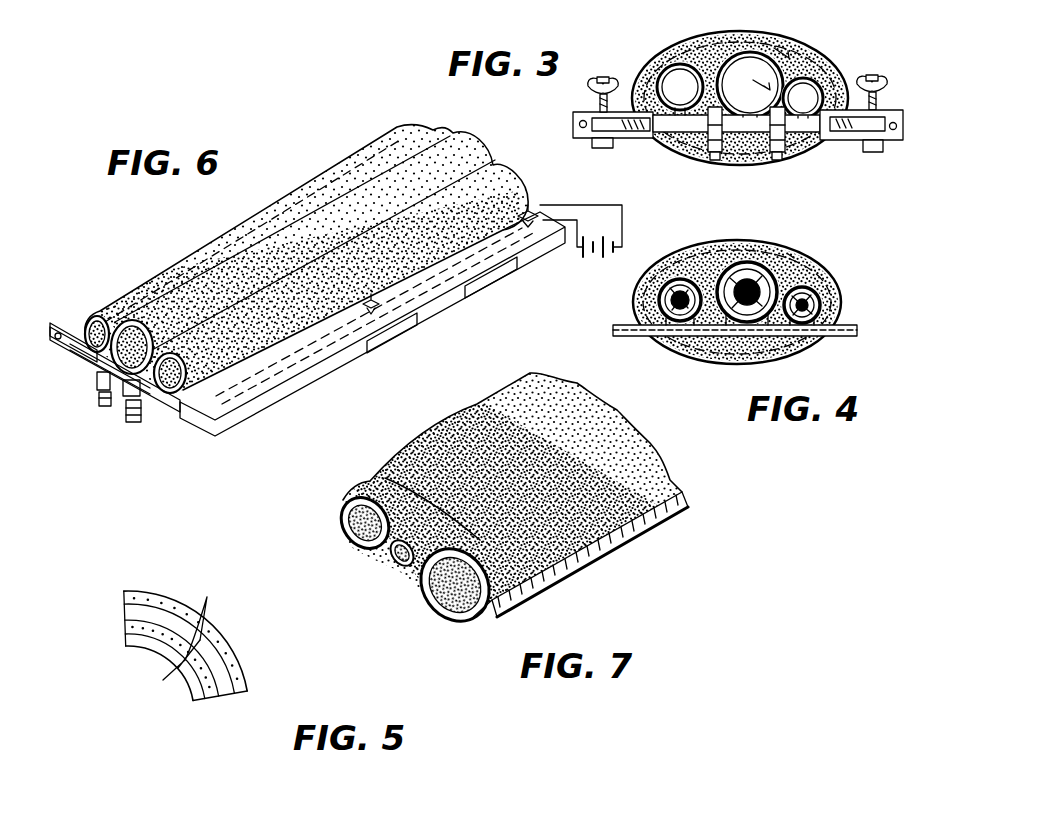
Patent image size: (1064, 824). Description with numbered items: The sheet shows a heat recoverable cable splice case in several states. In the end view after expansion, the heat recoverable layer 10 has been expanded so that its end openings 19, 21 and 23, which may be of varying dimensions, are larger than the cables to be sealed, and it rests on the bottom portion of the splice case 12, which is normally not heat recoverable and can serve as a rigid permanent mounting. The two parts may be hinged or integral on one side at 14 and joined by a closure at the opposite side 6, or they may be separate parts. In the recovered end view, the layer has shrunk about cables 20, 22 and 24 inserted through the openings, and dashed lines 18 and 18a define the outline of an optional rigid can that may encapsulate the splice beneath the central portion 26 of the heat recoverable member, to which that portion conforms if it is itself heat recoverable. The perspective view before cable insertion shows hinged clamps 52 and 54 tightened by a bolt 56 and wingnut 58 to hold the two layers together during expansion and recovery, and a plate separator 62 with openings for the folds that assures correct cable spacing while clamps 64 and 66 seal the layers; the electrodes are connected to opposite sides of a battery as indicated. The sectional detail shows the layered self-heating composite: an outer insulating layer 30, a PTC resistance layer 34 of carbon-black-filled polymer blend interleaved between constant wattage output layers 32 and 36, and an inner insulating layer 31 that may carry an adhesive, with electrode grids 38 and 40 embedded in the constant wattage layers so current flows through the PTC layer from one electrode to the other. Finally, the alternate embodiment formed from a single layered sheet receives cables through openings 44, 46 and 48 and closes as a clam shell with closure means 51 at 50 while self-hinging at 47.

In FIG. 4, the closure side 6 is at (858, 330).
In FIG. 4, the heat recoverable layer 10 is at (850, 312).
In FIG. 4, the bottom portion of the splice case 12 is at (853, 337).
In FIG. 4, the hinged side 14 is at (628, 325).
In FIG. 4, the dashed line 18 is at (793, 258).
In FIG. 4, the dashed line 18a is at (797, 272).
In FIG. 3, the end opening 19 is at (809, 78).
In FIG. 4, the end opening 19 is at (824, 276).
In FIG. 6, the end opening 19 is at (213, 352).
In FIG. 4, the cable 20 is at (832, 290).
In FIG. 3, the end opening 21 is at (746, 52).
In FIG. 4, the end opening 21 is at (750, 244).
In FIG. 6, the end opening 21 is at (163, 320).
In FIG. 4, the cable 22 is at (724, 246).
In FIG. 3, the end opening 23 is at (672, 54).
In FIG. 4, the end opening 23 is at (688, 262).
In FIG. 6, the end opening 23 is at (104, 298).
In FIG. 4, the cable 24 is at (660, 300).
In FIG. 3, the central portion of the heat recoverable member 26 is at (792, 22).
In FIG. 4, the central portion of the heat recoverable member 26 is at (790, 252).
In FIG. 6, the central portion of the heat recoverable member 26 is at (201, 238).
In FIG. 5, the outer insulating layer 30 is at (168, 590).
In FIG. 5, the inner insulating layer 31 is at (137, 647).
In FIG. 5, the constant wattage output layer 32 is at (226, 657).
In FIG. 5, the PTC resistance layer 34 is at (228, 703).
In FIG. 5, the constant wattage output layer 36 is at (213, 707).
In FIG. 5, the electrode grid 38 is at (210, 590).
In FIG. 5, the electrode grid 40 is at (179, 668).
In FIG. 7, the opening 44 is at (440, 600).
In FIG. 7, the opening 46 is at (397, 564).
In FIG. 7, the self-hinge 47 is at (348, 510).
In FIG. 7, the opening 48 is at (357, 545).
In FIG. 7, the closure location 50 is at (488, 618).
In FIG. 7, the closure means 51 is at (533, 597).
In FIG. 3, the hinged clamp 52 is at (893, 142).
In FIG. 6, the hinged clamp 52 is at (248, 414).
In FIG. 3, the hinged clamp 54 is at (581, 112).
In FIG. 6, the hinged clamp 54 is at (66, 364).
In FIG. 3, the bolt 56 is at (890, 96).
In FIG. 6, the bolt 56 is at (384, 304).
In FIG. 3, the wingnut 58 is at (877, 80).
In FIG. 6, the wingnut 58 is at (388, 296).
In FIG. 3, the plate separator 62 is at (670, 132).
In FIG. 6, the plate separator 62 is at (163, 408).
In FIG. 3, the clamp 64 is at (789, 155).
In FIG. 6, the clamp 64 is at (131, 414).
In FIG. 3, the clamp 66 is at (703, 150).
In FIG. 6, the clamp 66 is at (98, 386).